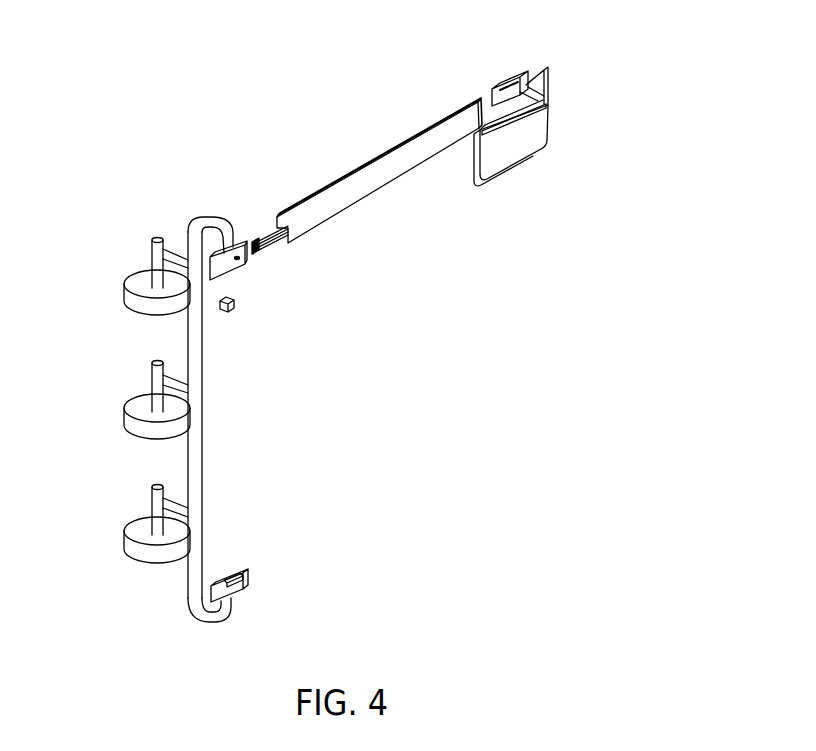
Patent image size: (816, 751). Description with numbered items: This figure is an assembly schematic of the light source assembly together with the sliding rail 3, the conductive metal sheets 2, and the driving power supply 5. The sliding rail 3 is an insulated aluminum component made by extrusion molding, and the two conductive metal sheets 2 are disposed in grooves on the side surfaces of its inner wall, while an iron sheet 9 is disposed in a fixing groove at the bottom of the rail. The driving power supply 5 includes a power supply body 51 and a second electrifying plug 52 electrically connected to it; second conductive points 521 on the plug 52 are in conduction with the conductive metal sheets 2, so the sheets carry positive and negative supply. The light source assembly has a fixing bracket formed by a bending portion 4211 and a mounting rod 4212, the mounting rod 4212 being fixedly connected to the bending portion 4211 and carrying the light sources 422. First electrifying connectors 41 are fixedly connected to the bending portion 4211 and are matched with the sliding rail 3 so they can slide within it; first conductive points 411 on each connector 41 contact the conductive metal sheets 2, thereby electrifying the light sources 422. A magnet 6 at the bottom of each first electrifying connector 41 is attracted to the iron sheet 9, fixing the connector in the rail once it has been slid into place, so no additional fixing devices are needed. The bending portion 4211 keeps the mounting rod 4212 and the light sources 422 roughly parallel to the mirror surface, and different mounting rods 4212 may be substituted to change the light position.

The conductive metal sheets 2 is at (259, 244).
The sliding rail 3 is at (397, 158).
The driving power supply 5 is at (577, 76).
The magnet 6 is at (232, 311).
The iron sheet 9 is at (261, 254).
The first electrifying connectors 41 is at (230, 216).
The power supply body 51 is at (503, 155).
The second electrifying plug 52 is at (527, 70).
The first conductive points 411 is at (226, 273).
The light source 422 is at (143, 302).
The second conductive points 521 is at (548, 104).
The bending portion 4211 is at (210, 219).
The mounting rod 4212 is at (201, 460).